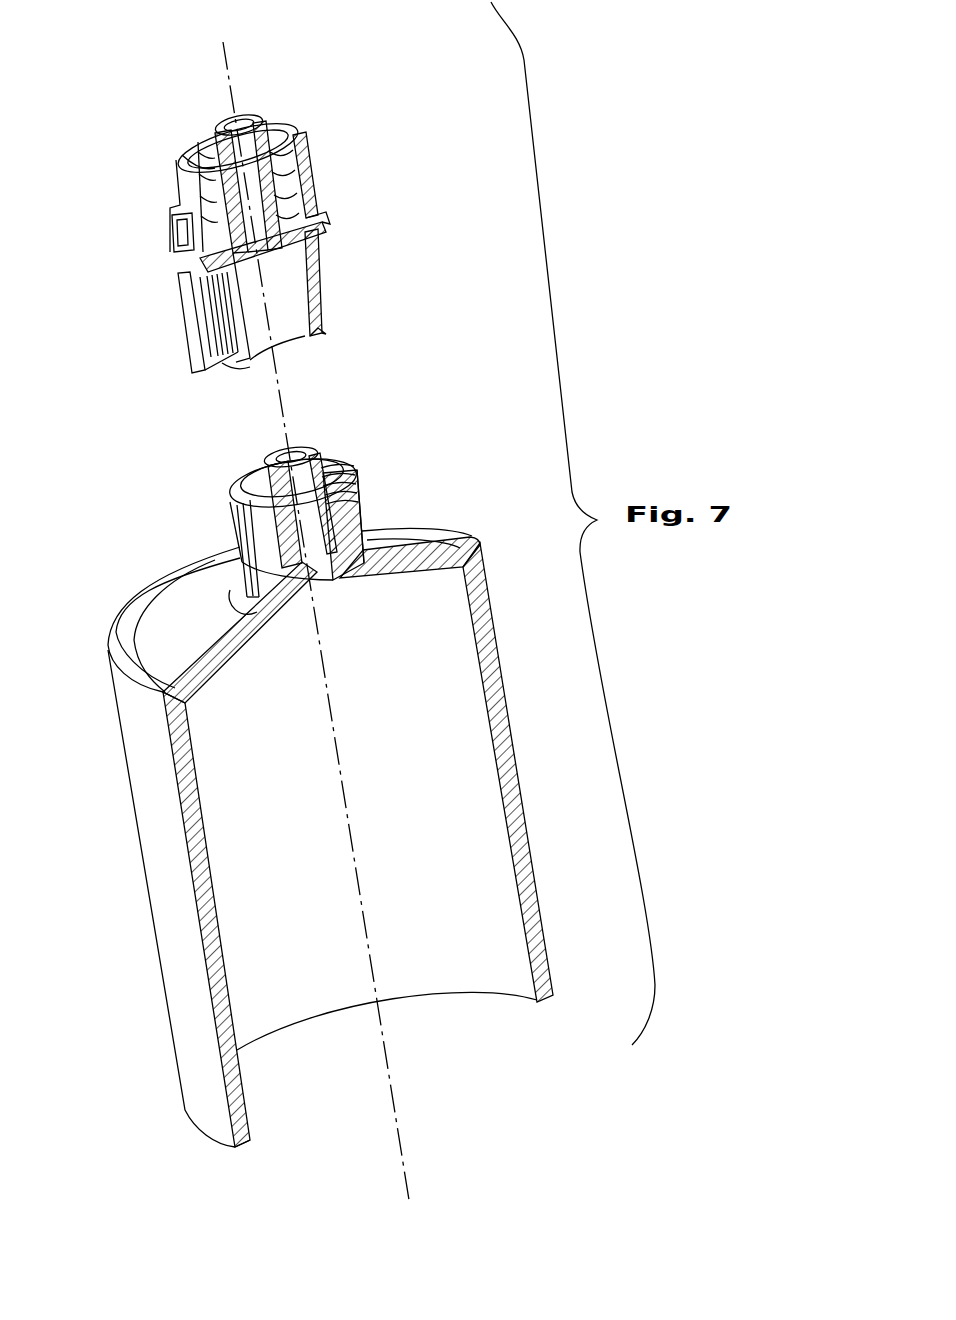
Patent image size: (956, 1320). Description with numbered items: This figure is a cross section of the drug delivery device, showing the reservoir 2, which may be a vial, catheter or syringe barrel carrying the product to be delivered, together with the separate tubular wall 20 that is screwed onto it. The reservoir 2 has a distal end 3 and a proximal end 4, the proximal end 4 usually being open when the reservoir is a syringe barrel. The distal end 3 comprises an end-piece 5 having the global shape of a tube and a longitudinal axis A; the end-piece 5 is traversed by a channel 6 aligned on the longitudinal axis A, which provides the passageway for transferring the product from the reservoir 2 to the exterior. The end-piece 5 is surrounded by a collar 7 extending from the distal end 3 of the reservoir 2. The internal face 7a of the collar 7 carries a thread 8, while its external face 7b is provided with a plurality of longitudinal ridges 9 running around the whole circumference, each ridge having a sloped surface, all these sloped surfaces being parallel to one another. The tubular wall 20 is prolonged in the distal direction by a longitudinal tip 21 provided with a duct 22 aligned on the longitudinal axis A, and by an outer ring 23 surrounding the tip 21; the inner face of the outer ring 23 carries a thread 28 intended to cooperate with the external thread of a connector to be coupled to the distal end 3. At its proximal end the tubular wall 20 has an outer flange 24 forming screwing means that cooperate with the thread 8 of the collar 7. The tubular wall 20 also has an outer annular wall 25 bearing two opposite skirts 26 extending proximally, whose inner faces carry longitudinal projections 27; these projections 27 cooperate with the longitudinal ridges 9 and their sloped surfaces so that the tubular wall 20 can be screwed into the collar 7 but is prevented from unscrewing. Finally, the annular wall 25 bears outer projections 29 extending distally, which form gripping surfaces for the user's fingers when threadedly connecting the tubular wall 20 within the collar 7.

The reservoir 2 is at (170, 1000).
The distal end 3 is at (465, 522).
The proximal end 4 is at (248, 1154).
The end-piece 5 is at (313, 458).
The channel 6 is at (307, 498).
The collar 7 is at (206, 499).
The internal face 7a is at (340, 523).
The external face 7b is at (360, 497).
The thread 8 is at (257, 472).
The longitudinal ridges 9 is at (222, 540).
The tubular wall 20 is at (271, 232).
The longitudinal tip 21 is at (265, 153).
The duct 22 is at (248, 145).
The outer ring 23 is at (319, 163).
The outer flange 24 is at (312, 335).
The outer annular wall 25 is at (318, 219).
The skirts 26 is at (177, 312).
The longitudinal projections 27 is at (218, 380).
The thread 28 is at (200, 137).
The outer projections 29 is at (172, 247).
The longitudinal axis A is at (417, 1172).